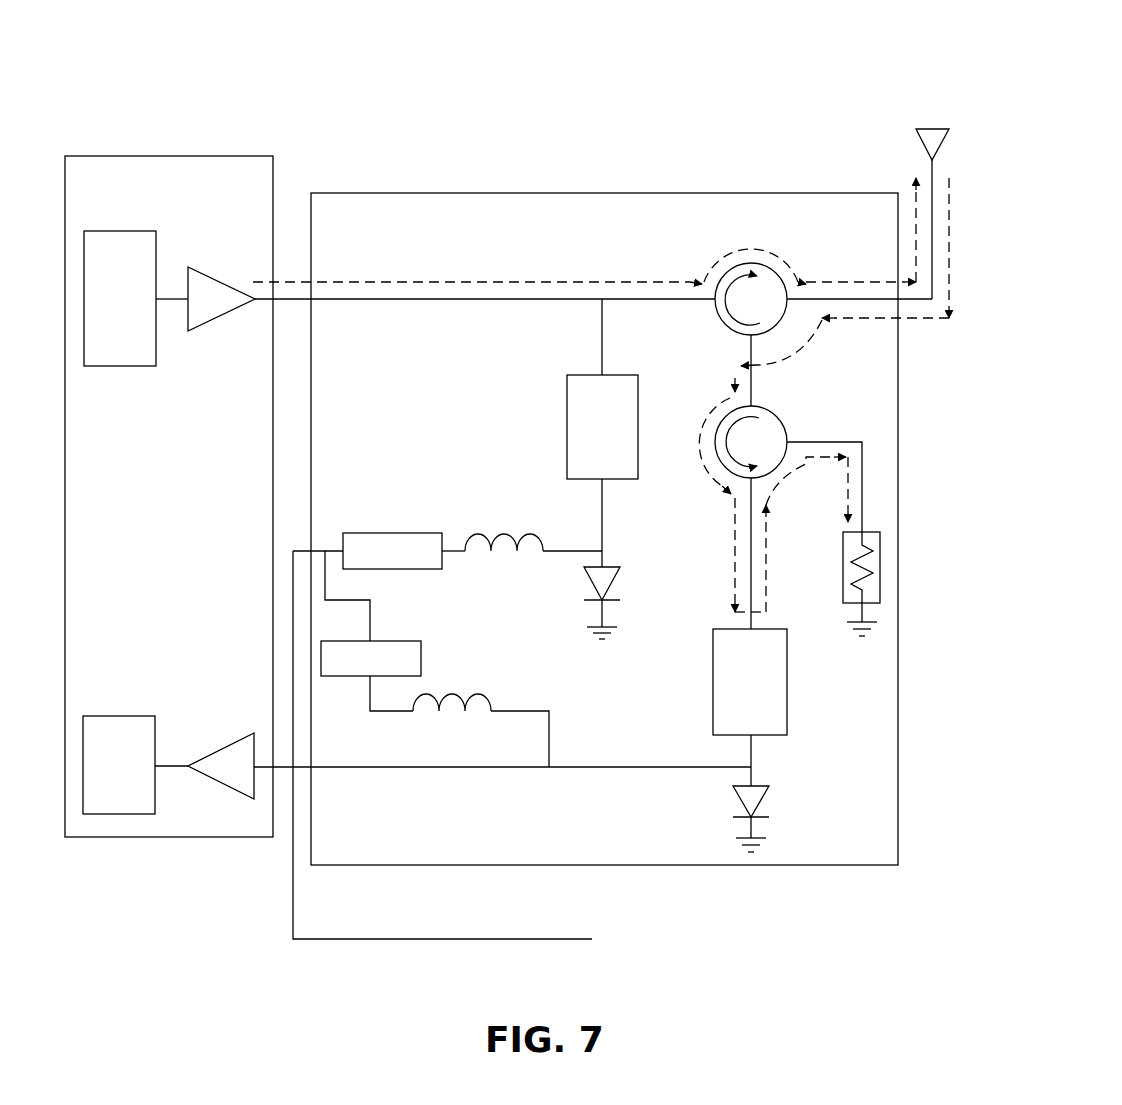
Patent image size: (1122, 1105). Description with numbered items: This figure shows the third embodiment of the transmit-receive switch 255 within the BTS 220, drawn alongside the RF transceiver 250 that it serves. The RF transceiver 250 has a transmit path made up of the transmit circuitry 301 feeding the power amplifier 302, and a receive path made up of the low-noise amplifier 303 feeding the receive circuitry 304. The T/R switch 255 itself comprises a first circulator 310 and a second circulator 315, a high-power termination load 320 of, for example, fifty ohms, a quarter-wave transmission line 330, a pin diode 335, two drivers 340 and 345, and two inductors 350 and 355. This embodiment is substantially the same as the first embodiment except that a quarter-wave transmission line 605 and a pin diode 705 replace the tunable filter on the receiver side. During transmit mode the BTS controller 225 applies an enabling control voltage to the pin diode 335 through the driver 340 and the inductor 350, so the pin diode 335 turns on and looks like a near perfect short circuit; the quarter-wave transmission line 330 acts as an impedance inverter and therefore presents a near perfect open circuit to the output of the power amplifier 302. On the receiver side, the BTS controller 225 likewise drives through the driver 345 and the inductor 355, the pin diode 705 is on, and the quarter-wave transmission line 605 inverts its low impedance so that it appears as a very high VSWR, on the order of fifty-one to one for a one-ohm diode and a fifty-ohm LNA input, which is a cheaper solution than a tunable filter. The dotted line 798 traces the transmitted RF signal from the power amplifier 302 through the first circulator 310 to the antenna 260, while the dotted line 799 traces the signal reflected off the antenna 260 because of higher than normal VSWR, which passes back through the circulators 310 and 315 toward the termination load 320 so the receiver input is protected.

The BTS 220 is at (704, 84).
The BTS controller 225 is at (499, 760).
The RF transceiver 250 is at (169, 156).
The T/R switch 255 is at (603, 193).
The antenna 260 is at (931, 128).
The transmit circuitry 301 is at (120, 367).
The power amplifier 302 is at (224, 283).
The low-noise amplifier 303 is at (218, 748).
The receive circuitry 304 is at (119, 716).
The circulator 310 is at (750, 263).
The circulator 315 is at (779, 414).
The high-power termination load 320 is at (843, 565).
The quarter-wave transmission line 330 is at (567, 427).
The pin diode 335 is at (619, 584).
The driver 340 is at (391, 533).
The driver 345 is at (400, 641).
The inductor 350 is at (505, 533).
The inductor 355 is at (474, 694).
The quarter-wave transmission line 605 is at (713, 683).
The pin diode 705 is at (768, 801).
The dotted line 798 is at (546, 282).
The dotted line 799 is at (925, 320).